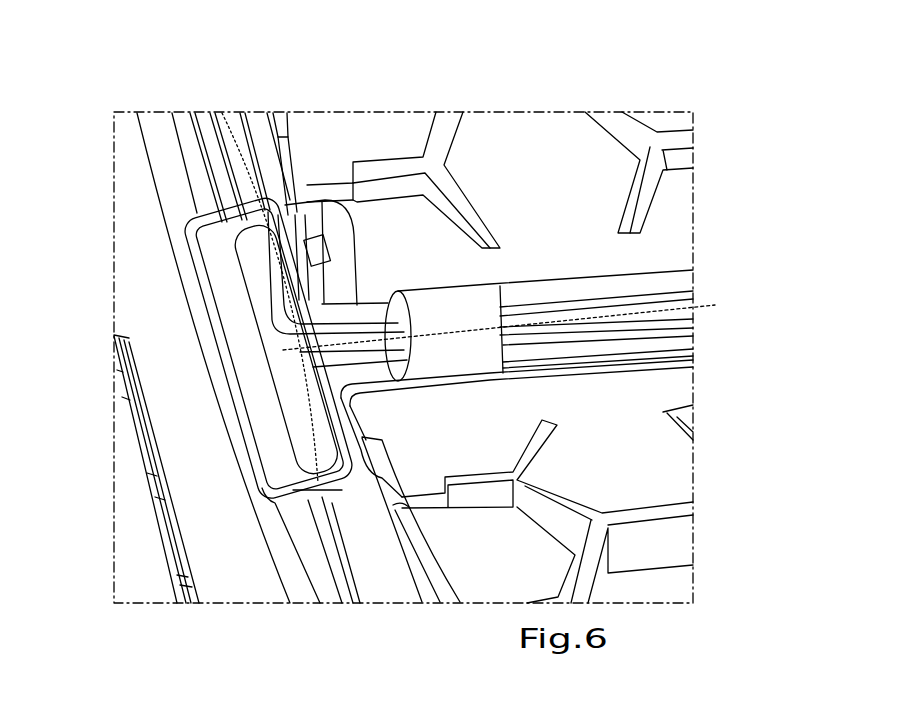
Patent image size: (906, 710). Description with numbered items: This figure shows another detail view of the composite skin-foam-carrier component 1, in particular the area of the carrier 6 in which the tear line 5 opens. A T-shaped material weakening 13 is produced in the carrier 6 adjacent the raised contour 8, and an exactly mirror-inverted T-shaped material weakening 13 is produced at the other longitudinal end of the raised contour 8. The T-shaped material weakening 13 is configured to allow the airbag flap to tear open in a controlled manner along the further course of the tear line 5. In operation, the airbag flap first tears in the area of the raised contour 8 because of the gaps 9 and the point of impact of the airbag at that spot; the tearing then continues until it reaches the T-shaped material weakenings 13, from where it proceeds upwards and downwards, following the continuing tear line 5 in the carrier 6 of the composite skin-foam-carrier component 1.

The composite skin-foam-carrier component 1 is at (731, 168).
The tear line 5 is at (352, 300).
The carrier 6 is at (136, 222).
The raised contour 8 is at (420, 303).
The gaps 9 is at (392, 348).
The T-shaped material weakening 13 is at (240, 355).